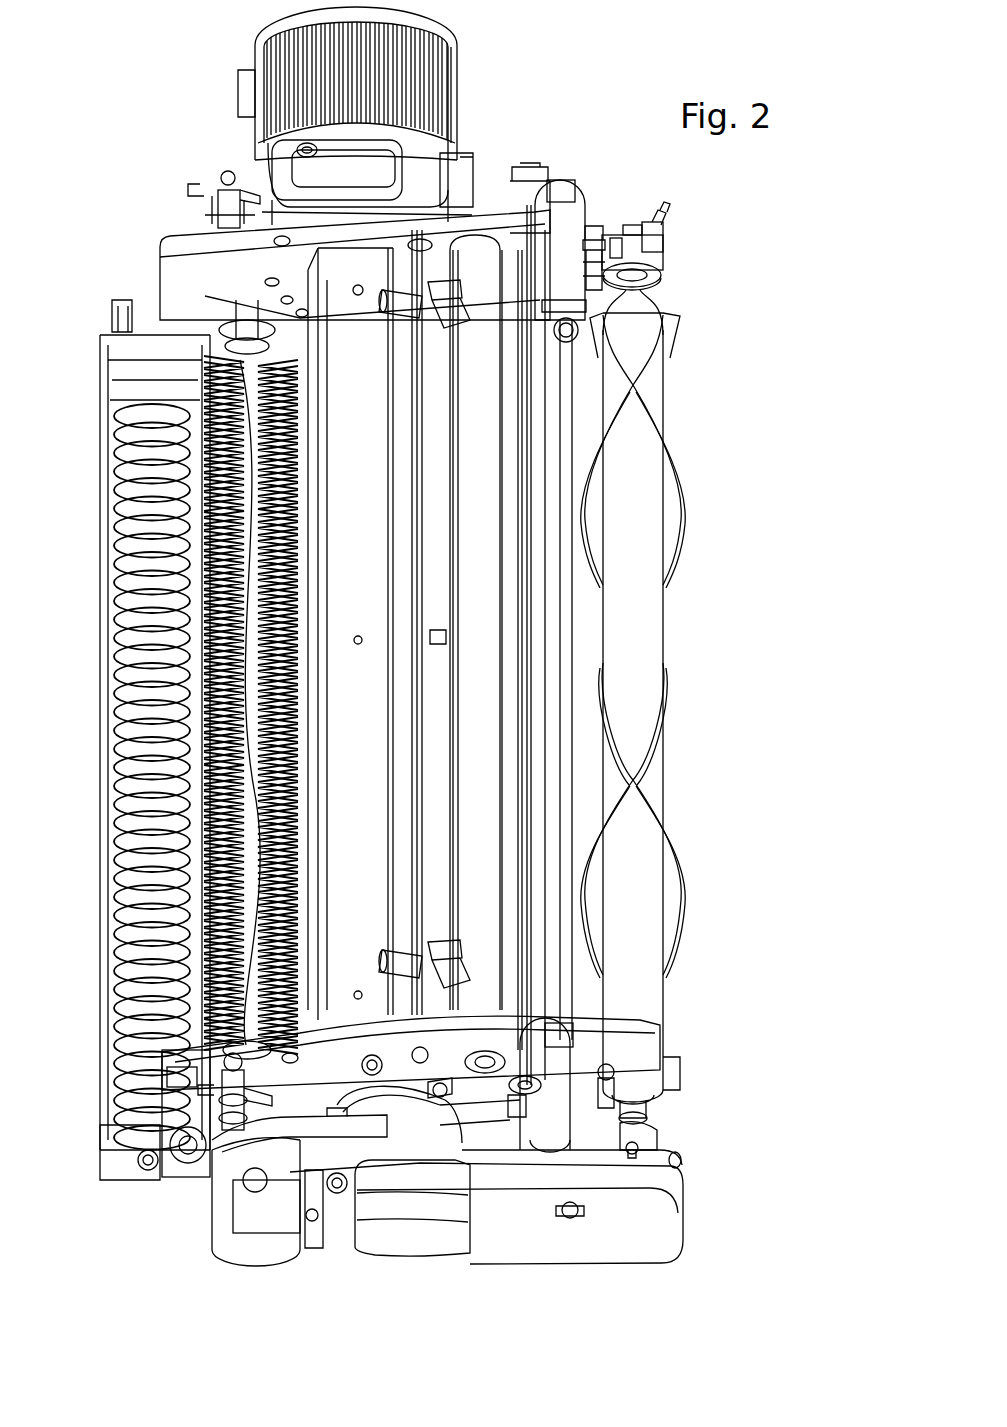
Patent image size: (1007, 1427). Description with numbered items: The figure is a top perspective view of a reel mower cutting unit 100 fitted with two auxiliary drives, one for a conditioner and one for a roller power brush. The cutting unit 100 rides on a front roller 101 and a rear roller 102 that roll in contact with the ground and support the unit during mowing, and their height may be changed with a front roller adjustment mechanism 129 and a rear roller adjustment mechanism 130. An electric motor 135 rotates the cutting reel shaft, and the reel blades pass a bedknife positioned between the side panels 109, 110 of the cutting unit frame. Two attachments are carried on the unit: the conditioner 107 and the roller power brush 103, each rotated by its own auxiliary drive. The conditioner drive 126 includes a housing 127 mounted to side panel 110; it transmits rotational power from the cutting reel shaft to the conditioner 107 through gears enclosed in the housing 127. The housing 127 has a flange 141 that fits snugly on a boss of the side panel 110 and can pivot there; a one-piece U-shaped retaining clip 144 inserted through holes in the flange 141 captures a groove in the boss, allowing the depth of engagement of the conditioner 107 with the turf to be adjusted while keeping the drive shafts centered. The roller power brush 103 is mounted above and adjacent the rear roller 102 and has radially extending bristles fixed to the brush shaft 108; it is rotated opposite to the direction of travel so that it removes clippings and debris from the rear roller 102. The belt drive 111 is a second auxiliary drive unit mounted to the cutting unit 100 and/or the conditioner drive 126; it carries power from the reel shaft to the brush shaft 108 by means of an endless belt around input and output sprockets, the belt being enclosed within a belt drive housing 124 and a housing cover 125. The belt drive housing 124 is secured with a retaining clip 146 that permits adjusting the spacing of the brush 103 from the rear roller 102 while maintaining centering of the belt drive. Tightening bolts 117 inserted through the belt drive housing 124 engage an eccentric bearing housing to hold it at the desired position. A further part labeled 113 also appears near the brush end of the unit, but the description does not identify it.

The reel mower cutting unit 100 is at (118, 130).
The electric motor 135 is at (268, 47).
The side panel 109 is at (172, 265).
The rear roller adjustment mechanism 130 is at (577, 205).
The conditioner 107 is at (200, 405).
The front roller 101 is at (125, 464).
The rear roller 102 is at (590, 412).
The roller power brush 103 is at (650, 1006).
The brush shaft 108 is at (640, 1112).
The fastener 113 is at (650, 1140).
The tightening bolts 117 is at (680, 1160).
The belt drive housing 124 is at (680, 1185).
The housing cover 125 is at (662, 1243).
The belt drive 111 is at (540, 1210).
The front roller adjustment mechanism 129 is at (170, 1108).
The side panel 110 is at (320, 1094).
The conditioner drive 126 is at (210, 1228).
The conditioner drive housing 127 is at (212, 1268).
The retaining clip 146 is at (366, 1238).
The flange 141 is at (403, 1118).
The retaining clip 144 is at (432, 1113).